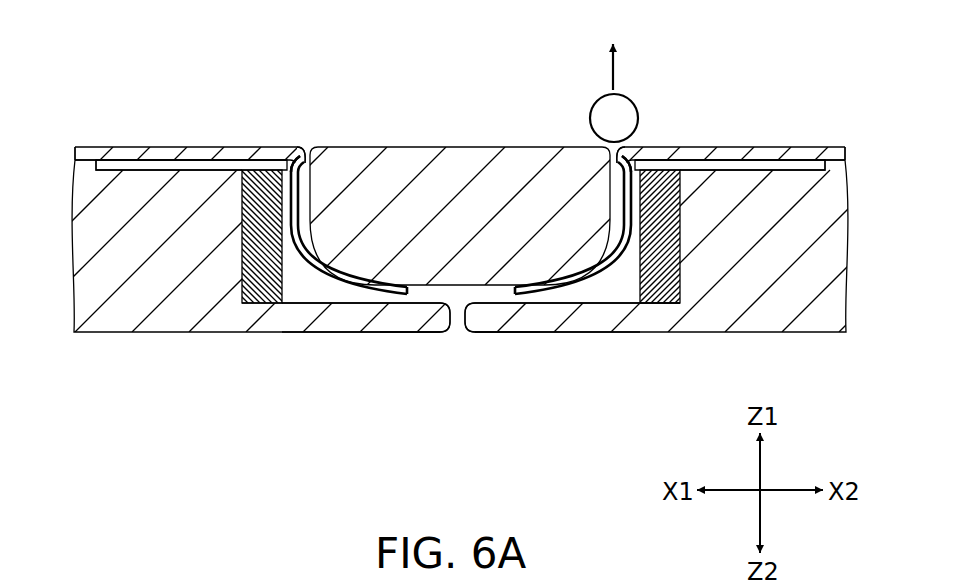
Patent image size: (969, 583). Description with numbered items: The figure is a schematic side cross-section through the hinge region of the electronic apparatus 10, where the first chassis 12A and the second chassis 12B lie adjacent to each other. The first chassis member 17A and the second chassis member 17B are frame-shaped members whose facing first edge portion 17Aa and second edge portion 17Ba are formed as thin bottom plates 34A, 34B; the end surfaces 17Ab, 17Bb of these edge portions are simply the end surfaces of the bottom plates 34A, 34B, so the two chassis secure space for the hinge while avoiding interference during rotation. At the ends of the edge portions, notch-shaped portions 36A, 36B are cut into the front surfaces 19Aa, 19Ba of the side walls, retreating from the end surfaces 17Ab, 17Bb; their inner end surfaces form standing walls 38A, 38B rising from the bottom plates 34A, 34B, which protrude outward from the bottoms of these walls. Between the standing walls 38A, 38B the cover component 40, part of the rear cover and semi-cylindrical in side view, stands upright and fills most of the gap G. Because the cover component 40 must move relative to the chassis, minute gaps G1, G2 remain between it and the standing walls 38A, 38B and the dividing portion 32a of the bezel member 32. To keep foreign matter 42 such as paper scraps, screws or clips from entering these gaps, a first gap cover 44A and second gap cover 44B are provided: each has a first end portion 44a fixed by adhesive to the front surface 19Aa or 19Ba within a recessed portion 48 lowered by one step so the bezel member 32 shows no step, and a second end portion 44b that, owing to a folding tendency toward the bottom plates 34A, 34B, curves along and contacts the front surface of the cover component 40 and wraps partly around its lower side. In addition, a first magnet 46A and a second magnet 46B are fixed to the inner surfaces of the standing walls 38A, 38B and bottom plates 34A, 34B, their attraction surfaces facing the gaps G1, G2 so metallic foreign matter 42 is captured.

The electronic apparatus 10 is at (50, 29).
The first chassis member 17A is at (289, 272).
The first chassis 12A is at (125, 307).
The second chassis member 17B is at (590, 272).
The second chassis 12B is at (805, 307).
The front surface of side wall 19Aa is at (82, 147).
The front surface of side wall 19Ba is at (845, 148).
The bezel member 32 is at (192, 155).
The dividing portion 32a is at (433, 117).
The gap G is at (302, 155).
The first gap G1 is at (305, 170).
The second gap G2 is at (612, 162).
The cover component 40 is at (460, 160).
The foreign matter 42 is at (623, 112).
The first end portion 44a is at (120, 167).
The second end portion 44b is at (352, 283).
The first gap cover 44A is at (320, 280).
The second gap cover 44B is at (603, 280).
The first magnet 46A is at (260, 177).
The second magnet 46B is at (673, 177).
The recessed portion 48 is at (152, 168).
The bottom plate 34A is at (338, 322).
The bottom plate 34B is at (578, 320).
The notch-shaped portion 36A is at (294, 290).
The notch-shaped portion 36B is at (628, 292).
The standing wall 38A is at (233, 300).
The standing wall 38B is at (690, 300).
The first edge portion 17Aa is at (400, 334).
The end surface 17Ab is at (453, 318).
The second edge portion 17Ba is at (522, 334).
The end surface 17Bb is at (467, 318).